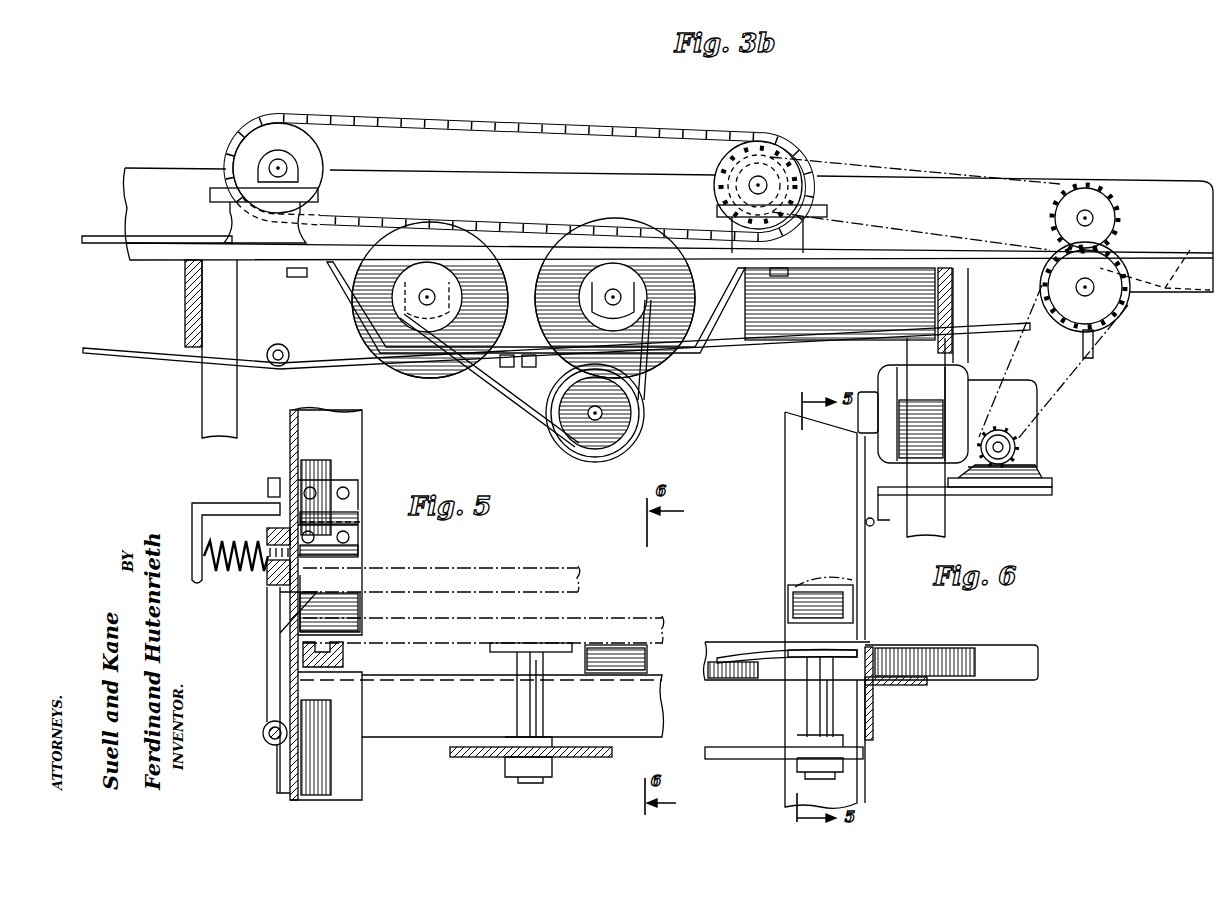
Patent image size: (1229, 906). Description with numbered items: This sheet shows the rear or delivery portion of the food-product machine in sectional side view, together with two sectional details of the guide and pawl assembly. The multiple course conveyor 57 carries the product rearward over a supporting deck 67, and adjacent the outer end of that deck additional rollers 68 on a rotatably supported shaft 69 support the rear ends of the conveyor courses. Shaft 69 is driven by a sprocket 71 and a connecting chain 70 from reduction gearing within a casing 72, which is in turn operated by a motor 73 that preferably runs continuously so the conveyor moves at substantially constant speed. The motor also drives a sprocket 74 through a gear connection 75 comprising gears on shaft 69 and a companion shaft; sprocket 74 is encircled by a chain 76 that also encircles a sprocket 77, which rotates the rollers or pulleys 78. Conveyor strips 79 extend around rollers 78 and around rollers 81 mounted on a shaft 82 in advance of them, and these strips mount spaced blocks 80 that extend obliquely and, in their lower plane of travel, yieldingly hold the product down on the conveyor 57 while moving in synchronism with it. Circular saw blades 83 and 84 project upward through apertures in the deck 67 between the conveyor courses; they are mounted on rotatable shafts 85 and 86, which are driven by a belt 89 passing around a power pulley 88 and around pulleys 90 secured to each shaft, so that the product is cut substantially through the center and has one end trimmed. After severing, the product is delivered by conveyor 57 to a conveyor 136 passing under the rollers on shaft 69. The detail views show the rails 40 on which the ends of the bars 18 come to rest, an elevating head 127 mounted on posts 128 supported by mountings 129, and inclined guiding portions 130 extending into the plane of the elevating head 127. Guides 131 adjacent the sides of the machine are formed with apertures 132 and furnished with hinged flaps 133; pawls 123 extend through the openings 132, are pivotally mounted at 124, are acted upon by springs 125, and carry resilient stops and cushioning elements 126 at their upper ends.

In FIG. 3B, the blocks 80 is at (521, 119).
In FIG. 3B, the rollers 81 is at (250, 146).
In FIG. 3B, the shaft 82 is at (286, 169).
In FIG. 3B, the conveyor strips 79 is at (566, 148).
In FIG. 3B, the rollers or pulleys 78 is at (721, 162).
In FIG. 3B, the sprocket 77 is at (776, 176).
In FIG. 3B, the chain 76 is at (970, 170).
In FIG. 3B, the sprocket 74 is at (1110, 217).
In FIG. 3B, the shaft 69 is at (1097, 291).
In FIG. 3B, the gear connection 75 is at (1118, 318).
In FIG. 3B, the rollers 68 is at (1108, 333).
In FIG. 3B, the conveyor 136 is at (1155, 258).
In FIG. 3B, the multiple course conveyor 57 is at (106, 236).
In FIG. 3B, the supporting deck 67 is at (843, 266).
In FIG. 3B, the circular saw blade 83 is at (430, 300).
In FIG. 3B, the circular saw blade 84 is at (615, 298).
In FIG. 3B, the pulleys 90 is at (420, 278).
In FIG. 3B, the shaft 85 is at (420, 300).
In FIG. 3B, the shaft 86 is at (640, 298).
In FIG. 3B, the belt 89 is at (512, 396).
In FIG. 3B, the power pulley 88 is at (598, 450).
In FIG. 3B, the motor 73 is at (913, 414).
In FIG. 3B, the casing 72 is at (1022, 386).
In FIG. 3B, the connecting chain 70 is at (1060, 412).
In FIG. 3B, the sprocket 71 is at (1092, 352).
In FIG. 5, the guides 131 is at (290, 411).
In FIG. 6, the guides 131 is at (785, 550).
In FIG. 5, the hinged flaps 133 is at (356, 560).
In FIG. 6, the hinged flaps 133 is at (860, 590).
In FIG. 5, the apertures 132 is at (312, 592).
In FIG. 6, the apertures 132 is at (790, 590).
In FIG. 5, the rods 18 is at (528, 568).
In FIG. 5, the guides or rails 40 is at (346, 662).
In FIG. 6, the guides or rails 40 is at (1005, 648).
In FIG. 5, the elevating head 127 is at (557, 645).
In FIG. 6, the elevating head 127 is at (840, 649).
In FIG. 5, the posts 128 is at (517, 705).
In FIG. 6, the posts 128 is at (812, 692).
In FIG. 5, the mountings 129 is at (456, 758).
In FIG. 6, the mountings 129 is at (758, 748).
In FIG. 5, the inclined guiding portions 130 is at (647, 660).
In FIG. 6, the inclined guiding portions 130 is at (764, 648).
In FIG. 5, the resilient stops and cushioning elements 126 is at (287, 520).
In FIG. 5, the springs 125 is at (226, 578).
In FIG. 5, the pawls 123 is at (292, 604).
In FIG. 6, the pawls 123 is at (800, 608).
In FIG. 5, the pivot 124 is at (263, 733).